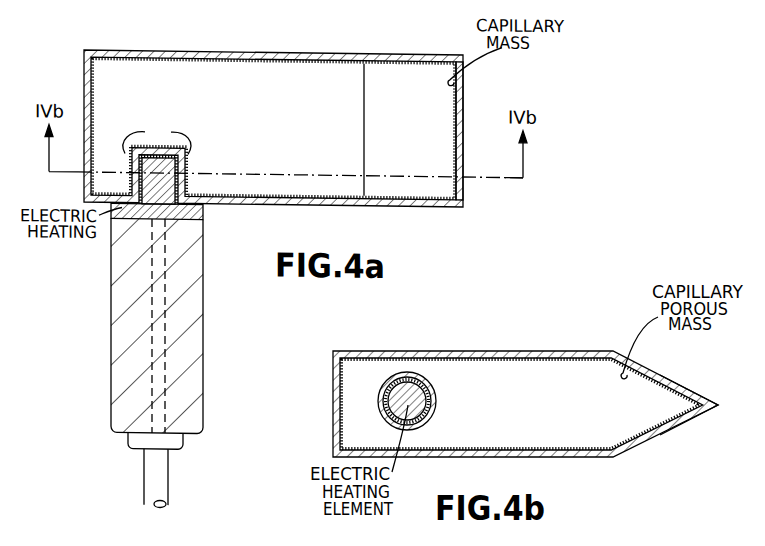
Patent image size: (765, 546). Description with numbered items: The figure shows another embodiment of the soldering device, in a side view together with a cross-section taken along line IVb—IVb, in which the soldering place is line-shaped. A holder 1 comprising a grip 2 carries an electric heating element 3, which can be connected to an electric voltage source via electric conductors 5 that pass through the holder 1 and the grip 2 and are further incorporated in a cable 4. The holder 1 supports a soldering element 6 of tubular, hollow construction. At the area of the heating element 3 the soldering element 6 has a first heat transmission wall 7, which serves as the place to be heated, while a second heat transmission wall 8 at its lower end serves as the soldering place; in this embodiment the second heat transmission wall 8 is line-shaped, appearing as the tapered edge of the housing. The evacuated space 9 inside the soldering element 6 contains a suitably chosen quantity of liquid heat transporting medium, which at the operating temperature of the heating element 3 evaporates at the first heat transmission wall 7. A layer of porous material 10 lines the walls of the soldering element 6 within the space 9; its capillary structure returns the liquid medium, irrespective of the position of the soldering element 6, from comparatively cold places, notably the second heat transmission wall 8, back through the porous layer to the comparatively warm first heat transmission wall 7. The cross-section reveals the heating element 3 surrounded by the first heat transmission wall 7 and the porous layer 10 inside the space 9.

In FIG. 4a, the holder 1 is at (203, 205).
In FIG. 4a, the grip 2 is at (187, 322).
In FIG. 4a, the electric heating element 3 is at (162, 184).
In FIG. 4b, the electric heating element 3 is at (412, 398).
In FIG. 4a, the cable 4 is at (157, 476).
In FIG. 4a, the electric conductors 5 is at (110, 324).
In FIG. 4a, the soldering element 6 is at (336, 50).
In FIG. 4b, the soldering element 6 is at (537, 351).
In FIG. 4a, the first heat transmission wall 7 is at (156, 146).
In FIG. 4b, the first heat transmission wall 7 is at (411, 372).
In FIG. 4a, the second heat transmission wall 8 is at (450, 123).
In FIG. 4b, the second heat transmission wall 8 is at (717, 412).
In FIG. 4a, the evacuated space 9 is at (322, 124).
In FIG. 4b, the evacuated space 9 is at (534, 410).
In FIG. 4a, the layer of porous material 10 is at (92, 92).
In FIG. 4b, the layer of porous material 10 is at (380, 398).